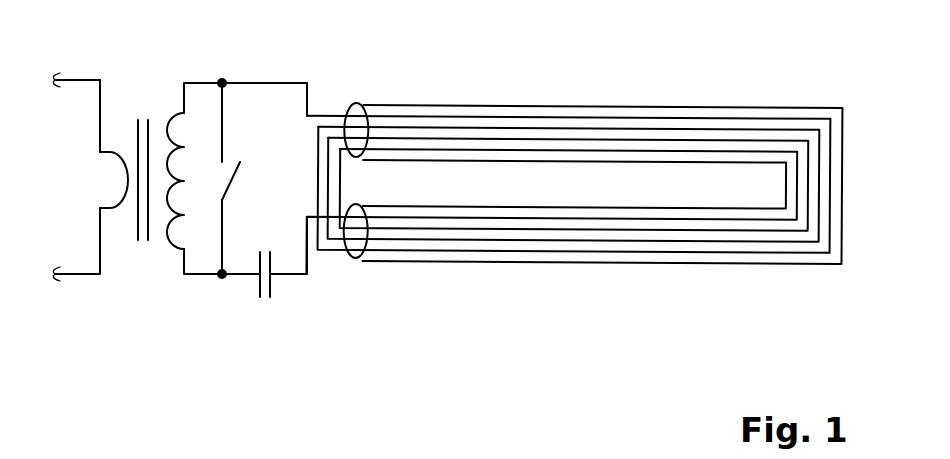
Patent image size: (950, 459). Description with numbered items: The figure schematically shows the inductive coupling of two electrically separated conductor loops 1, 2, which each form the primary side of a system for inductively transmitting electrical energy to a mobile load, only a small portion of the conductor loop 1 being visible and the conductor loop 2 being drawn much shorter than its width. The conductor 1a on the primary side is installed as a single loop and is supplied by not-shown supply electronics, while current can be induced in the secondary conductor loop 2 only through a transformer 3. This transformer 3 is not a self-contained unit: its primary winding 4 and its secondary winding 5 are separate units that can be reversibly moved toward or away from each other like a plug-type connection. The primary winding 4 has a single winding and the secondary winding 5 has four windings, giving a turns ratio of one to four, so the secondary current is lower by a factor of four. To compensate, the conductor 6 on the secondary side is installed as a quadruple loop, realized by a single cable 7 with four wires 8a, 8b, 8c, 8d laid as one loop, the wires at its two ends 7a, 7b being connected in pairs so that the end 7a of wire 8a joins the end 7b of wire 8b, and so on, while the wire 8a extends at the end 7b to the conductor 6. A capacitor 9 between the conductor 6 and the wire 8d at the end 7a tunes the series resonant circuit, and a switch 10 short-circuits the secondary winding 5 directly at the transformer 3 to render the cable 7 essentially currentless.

The conductor loop 1 is at (67, 294).
The conductor 1a is at (75, 80).
The conductor loop 2 is at (558, 297).
The transformer 3 is at (177, 287).
The primary winding 4 is at (112, 202).
The secondary winding 5 is at (177, 117).
The conductor 6 is at (267, 83).
The cable 7 is at (446, 105).
The end 7a is at (356, 234).
The end 7b is at (358, 130).
The wire 8a is at (555, 116).
The wire 8b is at (605, 127).
The wire 8c is at (667, 138).
The wire 8d is at (716, 149).
The capacitor 9 is at (271, 278).
The switch 10 is at (232, 187).